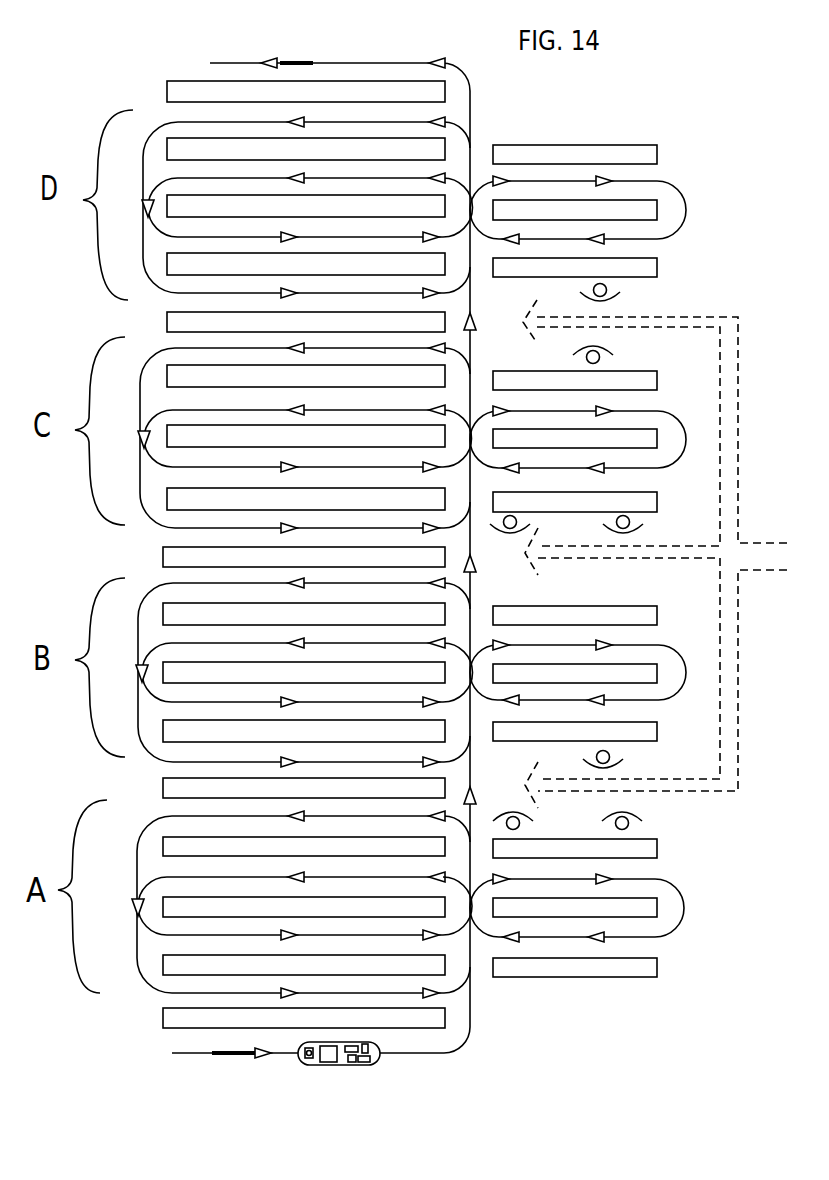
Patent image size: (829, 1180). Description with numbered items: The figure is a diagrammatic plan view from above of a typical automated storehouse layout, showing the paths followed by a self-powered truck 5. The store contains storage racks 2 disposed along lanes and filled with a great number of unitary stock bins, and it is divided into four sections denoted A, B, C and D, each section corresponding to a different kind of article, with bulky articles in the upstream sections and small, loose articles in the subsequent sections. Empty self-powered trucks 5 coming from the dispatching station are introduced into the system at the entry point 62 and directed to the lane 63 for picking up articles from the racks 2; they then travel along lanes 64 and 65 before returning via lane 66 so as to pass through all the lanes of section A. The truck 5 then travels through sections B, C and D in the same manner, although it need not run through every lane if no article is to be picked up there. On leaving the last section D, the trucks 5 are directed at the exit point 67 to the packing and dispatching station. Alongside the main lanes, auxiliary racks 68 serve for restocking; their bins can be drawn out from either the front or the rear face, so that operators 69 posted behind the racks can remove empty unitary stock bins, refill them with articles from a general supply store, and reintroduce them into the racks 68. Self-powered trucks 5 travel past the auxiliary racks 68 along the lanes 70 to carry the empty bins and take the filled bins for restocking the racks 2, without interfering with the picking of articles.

The storage rack 2 is at (167, 88).
The self-powered truck 5 is at (345, 1066).
The entry point 62 is at (200, 1056).
The lane 63 is at (185, 811).
The lane 64 is at (185, 938).
The lane 65 is at (200, 876).
The lane 66 is at (175, 992).
The exit point 67 is at (256, 63).
The auxiliary rack 68 is at (657, 152).
The operator 69 is at (606, 298).
The lane 70 is at (686, 211).